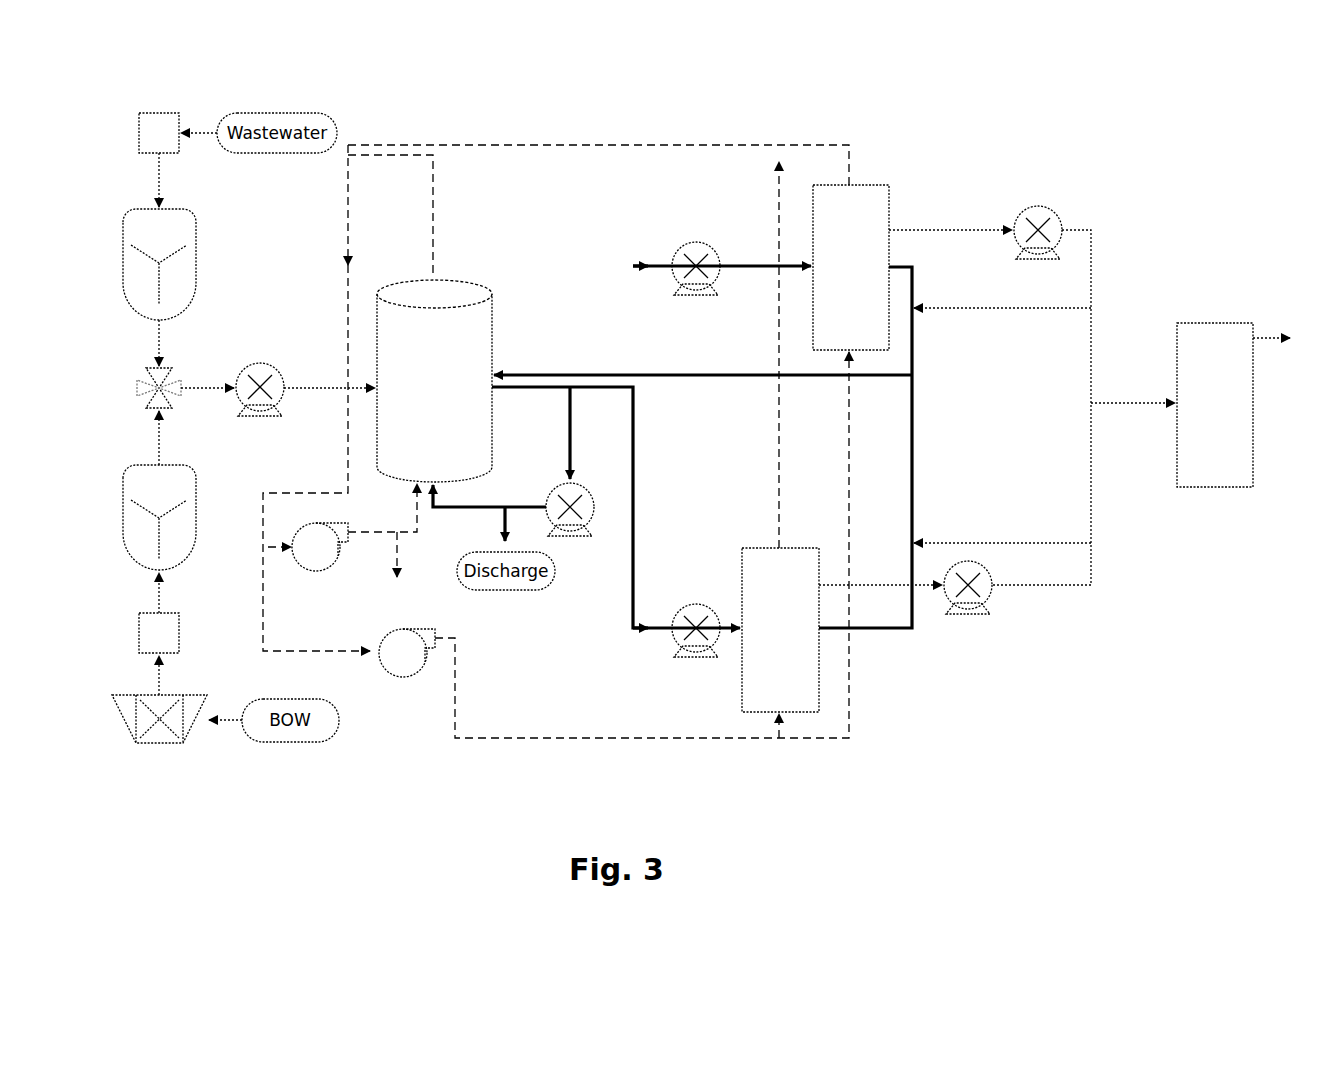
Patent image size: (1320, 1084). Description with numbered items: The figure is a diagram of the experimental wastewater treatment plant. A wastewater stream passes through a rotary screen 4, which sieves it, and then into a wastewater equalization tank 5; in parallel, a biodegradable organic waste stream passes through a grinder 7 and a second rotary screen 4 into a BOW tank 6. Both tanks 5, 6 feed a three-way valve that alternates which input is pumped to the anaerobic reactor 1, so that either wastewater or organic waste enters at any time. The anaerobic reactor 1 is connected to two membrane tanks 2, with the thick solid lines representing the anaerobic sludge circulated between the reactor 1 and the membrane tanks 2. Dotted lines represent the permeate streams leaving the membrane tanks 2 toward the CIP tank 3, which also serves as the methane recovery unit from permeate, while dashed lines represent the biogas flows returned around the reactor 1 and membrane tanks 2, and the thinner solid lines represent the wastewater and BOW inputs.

The anaerobic reactor 1 is at (434, 381).
The membrane tank 2 is at (815, 448).
The CIP tank 3 is at (1215, 405).
The rotary screen 4 is at (159, 383).
The wastewater equalization tank 5 is at (159, 264).
The BOW tank 6 is at (159, 517).
The grinder 7 is at (159, 734).